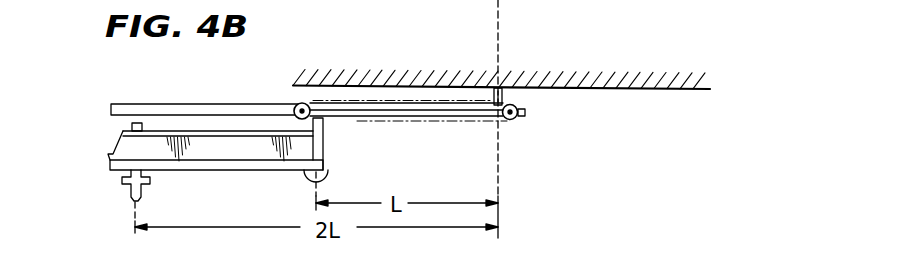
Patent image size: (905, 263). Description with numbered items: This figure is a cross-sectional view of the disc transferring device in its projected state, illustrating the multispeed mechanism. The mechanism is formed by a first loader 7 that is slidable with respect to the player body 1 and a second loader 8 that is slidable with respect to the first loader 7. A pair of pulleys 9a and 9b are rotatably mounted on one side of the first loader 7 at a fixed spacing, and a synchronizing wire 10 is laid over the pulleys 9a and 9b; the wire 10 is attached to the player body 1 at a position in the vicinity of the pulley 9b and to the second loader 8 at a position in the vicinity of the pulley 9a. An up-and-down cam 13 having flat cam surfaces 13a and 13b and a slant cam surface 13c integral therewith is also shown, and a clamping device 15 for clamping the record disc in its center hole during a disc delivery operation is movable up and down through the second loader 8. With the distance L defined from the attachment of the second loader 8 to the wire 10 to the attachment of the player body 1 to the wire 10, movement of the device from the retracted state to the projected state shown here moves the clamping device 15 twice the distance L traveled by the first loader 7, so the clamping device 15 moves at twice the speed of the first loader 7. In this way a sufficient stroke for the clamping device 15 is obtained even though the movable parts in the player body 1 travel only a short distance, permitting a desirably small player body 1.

The player body 1 is at (704, 88).
The first loader 7 is at (218, 104).
The second loader 8 is at (321, 178).
The pulley 9a is at (516, 105).
The pulley 9b is at (296, 104).
The synchronizing wire 10 is at (413, 102).
The up-and-down cam 13 is at (230, 147).
The flat cam surface 13a is at (118, 152).
The flat cam surface 13b is at (147, 133).
The slant cam surface 13c is at (127, 147).
The clamping device 15 is at (119, 200).